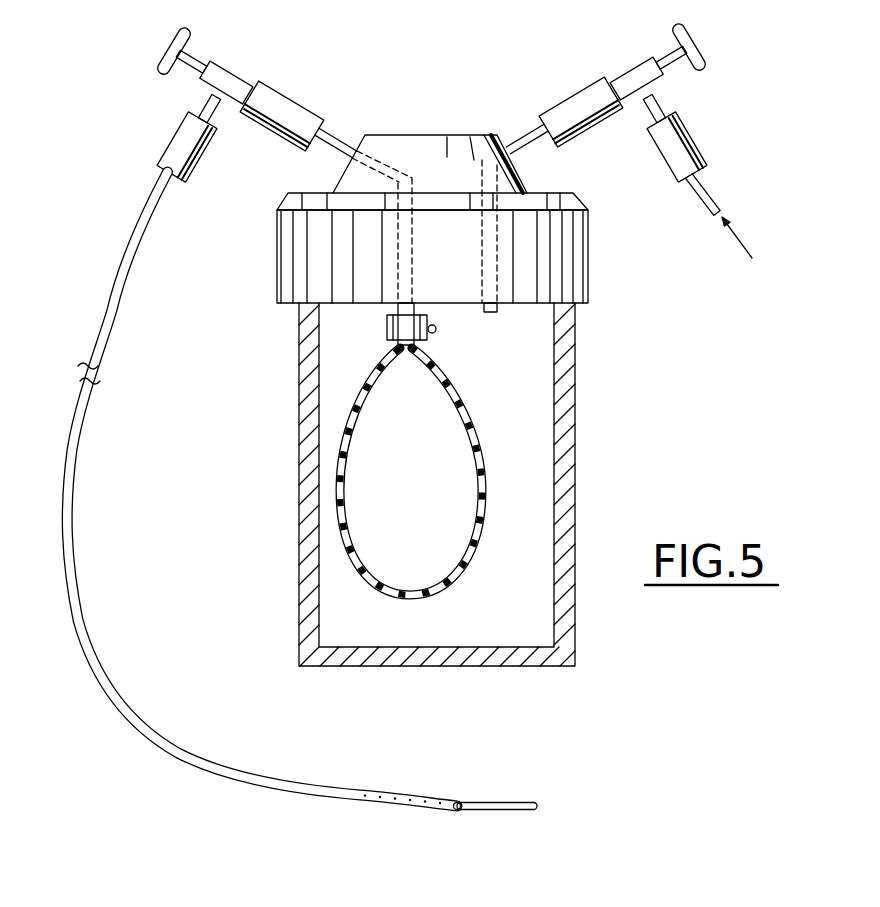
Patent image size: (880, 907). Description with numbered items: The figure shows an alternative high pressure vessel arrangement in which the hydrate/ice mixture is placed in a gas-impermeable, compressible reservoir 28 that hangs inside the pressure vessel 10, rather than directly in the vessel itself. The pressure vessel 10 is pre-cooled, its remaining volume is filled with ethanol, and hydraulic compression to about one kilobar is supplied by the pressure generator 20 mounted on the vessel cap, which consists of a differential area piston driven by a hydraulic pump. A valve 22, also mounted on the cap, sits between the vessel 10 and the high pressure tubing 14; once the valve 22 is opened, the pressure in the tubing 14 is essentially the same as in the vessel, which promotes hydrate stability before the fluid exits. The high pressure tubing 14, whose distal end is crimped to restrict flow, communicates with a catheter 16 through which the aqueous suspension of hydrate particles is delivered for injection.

The pressure vessel 10 is at (574, 371).
The high pressure tubing 14 is at (120, 272).
The catheter 16 is at (497, 803).
The pressure generator 20 is at (628, 70).
The valve 22 is at (236, 68).
The compressible reservoir 28 is at (481, 541).